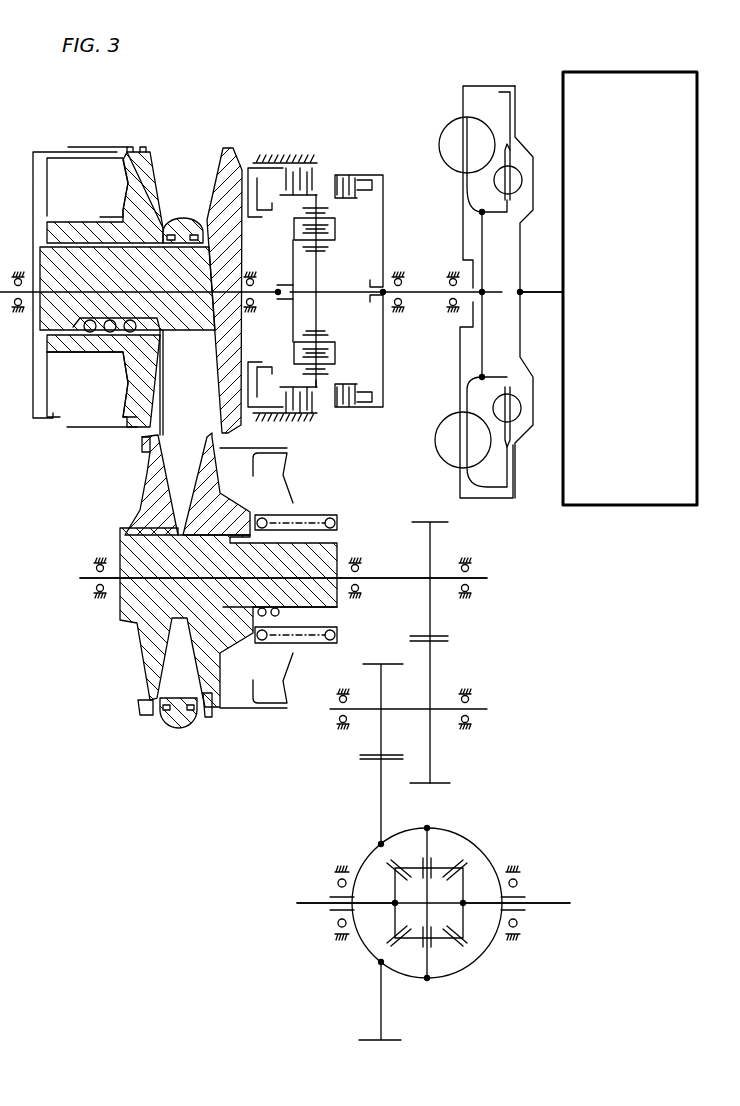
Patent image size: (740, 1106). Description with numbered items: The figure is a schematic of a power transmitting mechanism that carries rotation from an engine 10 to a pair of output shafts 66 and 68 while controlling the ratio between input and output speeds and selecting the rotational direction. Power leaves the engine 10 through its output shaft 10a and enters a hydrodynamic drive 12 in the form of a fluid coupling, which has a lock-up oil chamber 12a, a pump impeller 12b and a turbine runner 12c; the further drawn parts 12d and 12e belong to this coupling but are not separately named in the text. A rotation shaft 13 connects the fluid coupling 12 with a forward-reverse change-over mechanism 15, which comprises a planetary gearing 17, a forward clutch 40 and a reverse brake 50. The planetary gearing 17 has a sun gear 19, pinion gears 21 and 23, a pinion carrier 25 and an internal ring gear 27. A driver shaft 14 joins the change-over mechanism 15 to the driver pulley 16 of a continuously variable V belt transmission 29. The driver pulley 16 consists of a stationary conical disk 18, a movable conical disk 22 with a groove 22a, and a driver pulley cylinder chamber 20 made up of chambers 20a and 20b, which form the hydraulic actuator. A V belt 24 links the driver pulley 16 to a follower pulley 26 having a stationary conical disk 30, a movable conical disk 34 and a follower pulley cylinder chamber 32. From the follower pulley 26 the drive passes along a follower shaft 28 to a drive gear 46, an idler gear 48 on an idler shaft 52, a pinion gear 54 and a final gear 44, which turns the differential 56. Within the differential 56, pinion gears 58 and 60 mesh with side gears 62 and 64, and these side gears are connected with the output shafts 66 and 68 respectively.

The engine 10 is at (632, 72).
The output shaft of the engine 10a is at (542, 296).
The hydrodynamic drive 12 is at (491, 83).
The lock-up oil chamber 12a is at (508, 357).
The pump impeller 12b is at (437, 440).
The turbine runner 12c is at (493, 436).
The one-way clutch 12d is at (510, 131).
The lock-up clutch 12e is at (513, 107).
The rotation shaft 13 is at (430, 300).
The driver shaft 14 is at (268, 295).
The forward-reverse change-over mechanism 15 is at (290, 143).
The driver pulley 16 is at (225, 138).
The planetary gearing 17 is at (355, 236).
The stationary conical disk 18 is at (230, 148).
The sun gear 19 is at (318, 306).
The driver pulley cylinder chamber 20 is at (67, 175).
The chamber 20a is at (40, 415).
The chamber 20b is at (115, 158).
The pinion gear 21 is at (326, 333).
The movable conical disk 22 is at (147, 150).
The groove 22a is at (165, 177).
The pinion gear 23 is at (327, 368).
The V belt 24 is at (157, 420).
The pinion carrier 25 is at (292, 330).
The follower pulley 26 is at (165, 733).
The internal (ring) gear 27 is at (320, 380).
The follower shaft 28 is at (395, 580).
The continuously variable V belt transmission 29 is at (130, 509).
The stationary conical disk 30 is at (150, 655).
The follower pulley cylinder chamber 32 is at (233, 692).
The movable conical disk 34 is at (207, 695).
The forward clutch 40 is at (360, 173).
The final gear 44 is at (392, 1042).
The drive gear 46 is at (424, 520).
The idler gear 48 is at (430, 750).
The reverse brake 50 is at (322, 168).
The idler shaft 52 is at (440, 710).
The pinion gear 54 is at (378, 733).
The differential 56 is at (497, 846).
The pinion gear 58 is at (447, 942).
The pinion gear 60 is at (414, 867).
The side gear 62 is at (390, 922).
The side gear 64 is at (465, 885).
The output shaft 66 is at (305, 904).
The output shaft 68 is at (560, 904).